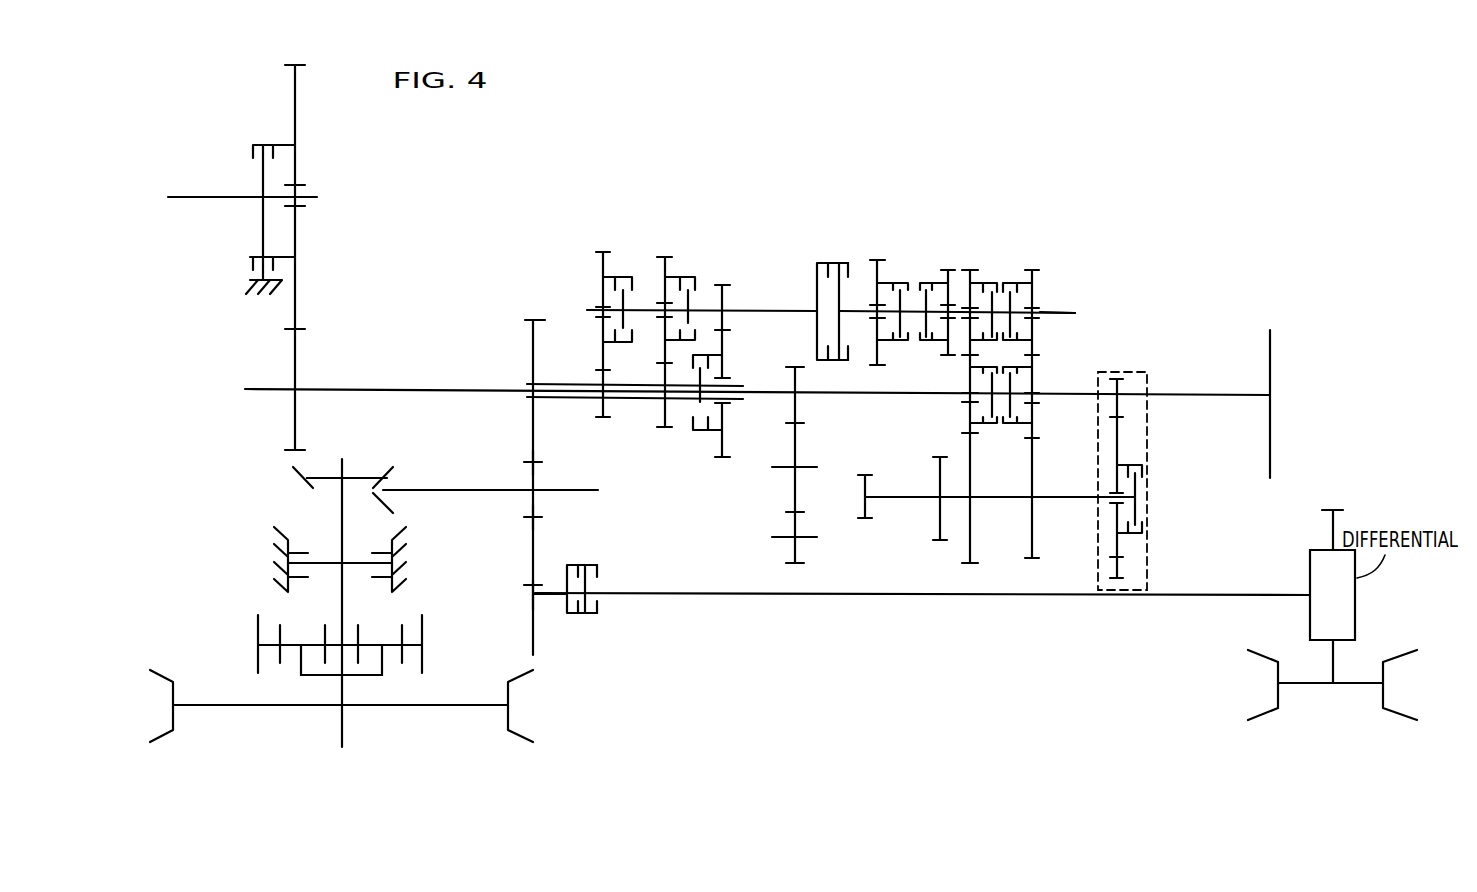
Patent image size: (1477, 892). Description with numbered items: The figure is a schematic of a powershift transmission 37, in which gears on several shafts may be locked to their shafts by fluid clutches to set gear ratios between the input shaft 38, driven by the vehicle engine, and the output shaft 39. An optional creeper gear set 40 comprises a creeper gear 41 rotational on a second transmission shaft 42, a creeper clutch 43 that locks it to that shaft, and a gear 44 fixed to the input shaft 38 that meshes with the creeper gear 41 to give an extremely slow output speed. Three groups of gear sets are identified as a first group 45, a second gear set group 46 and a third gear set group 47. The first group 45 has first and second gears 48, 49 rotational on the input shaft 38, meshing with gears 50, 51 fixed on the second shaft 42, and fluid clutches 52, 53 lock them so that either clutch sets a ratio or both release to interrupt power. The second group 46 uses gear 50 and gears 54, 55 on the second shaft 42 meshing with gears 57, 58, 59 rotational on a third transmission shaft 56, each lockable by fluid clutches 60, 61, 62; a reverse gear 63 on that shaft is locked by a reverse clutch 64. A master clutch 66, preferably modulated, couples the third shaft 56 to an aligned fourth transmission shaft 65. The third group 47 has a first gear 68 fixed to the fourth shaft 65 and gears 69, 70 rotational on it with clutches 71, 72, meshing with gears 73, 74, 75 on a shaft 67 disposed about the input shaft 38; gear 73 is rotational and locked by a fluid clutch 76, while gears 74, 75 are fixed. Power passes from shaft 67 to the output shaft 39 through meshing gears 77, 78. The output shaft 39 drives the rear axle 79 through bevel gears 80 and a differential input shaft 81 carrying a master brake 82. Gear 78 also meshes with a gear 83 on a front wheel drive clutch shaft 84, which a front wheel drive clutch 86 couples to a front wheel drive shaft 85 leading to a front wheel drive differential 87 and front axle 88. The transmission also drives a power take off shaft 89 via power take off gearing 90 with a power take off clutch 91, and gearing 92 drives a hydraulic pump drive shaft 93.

The transmission 37 is at (1010, 141).
The input shaft 38 is at (1210, 393).
The output shaft 39 is at (438, 492).
The creeper gear set 40 is at (1148, 578).
The creeper gear 41 is at (1118, 557).
The second transmission shaft 42 is at (1045, 499).
The creeper clutch 43 is at (1142, 468).
The gear 44 is at (1125, 380).
The first group of gear sets 45 is at (889, 546).
The second gear set group 46 is at (1140, 235).
The third gear set group 47 is at (688, 232).
The first gear 48 is at (968, 424).
The second gear 49 is at (1035, 428).
The gear 50 is at (968, 514).
The gear 51 is at (1028, 535).
The fluid clutch 52 is at (983, 430).
The fluid clutch 53 is at (1013, 433).
The gear 54 is at (865, 497).
The gear 55 is at (940, 528).
The third transmission shaft 56 is at (1055, 309).
The gear 57 is at (876, 258).
The gear 58 is at (957, 270).
The gear 59 is at (980, 270).
The fluid clutch 60 is at (893, 283).
The fluid clutch 61 is at (930, 283).
The fluid clutch 62 is at (1000, 272).
The reverse gear 63 is at (1037, 277).
The reverse clutch 64 is at (1020, 272).
The fourth transmission shaft 65 is at (776, 308).
The master clutch 66 is at (832, 263).
The shaft 67 is at (580, 384).
The first gear 68 is at (722, 318).
The gear 69 is at (665, 268).
The gear 70 is at (603, 270).
The clutch 71 is at (695, 268).
The clutch 72 is at (622, 285).
The gear 73 is at (722, 440).
The gear 74 is at (665, 410).
The gear 75 is at (601, 400).
The fluid clutch 76 is at (700, 432).
The gear 77 is at (533, 362).
The gear 78 is at (533, 478).
The rear axle 79 is at (410, 703).
The bevel gears 80 is at (386, 467).
The differential input shaft 81 is at (340, 493).
The master brake 82 is at (330, 563).
The gear 83 is at (535, 548).
The front wheel drive clutch shaft 84 is at (537, 597).
The front wheel drive shaft 85 is at (797, 596).
The front wheel drive clutch 86 is at (597, 597).
The front wheel drive differential 87 is at (1310, 562).
The front axle 88 is at (1345, 684).
The power take off shaft 89 is at (213, 196).
The power take off gearing 90 is at (345, 218).
The power take off clutch 91 is at (268, 143).
The gearing 92 is at (750, 489).
The hydraulic pump drive shaft 93 is at (785, 538).